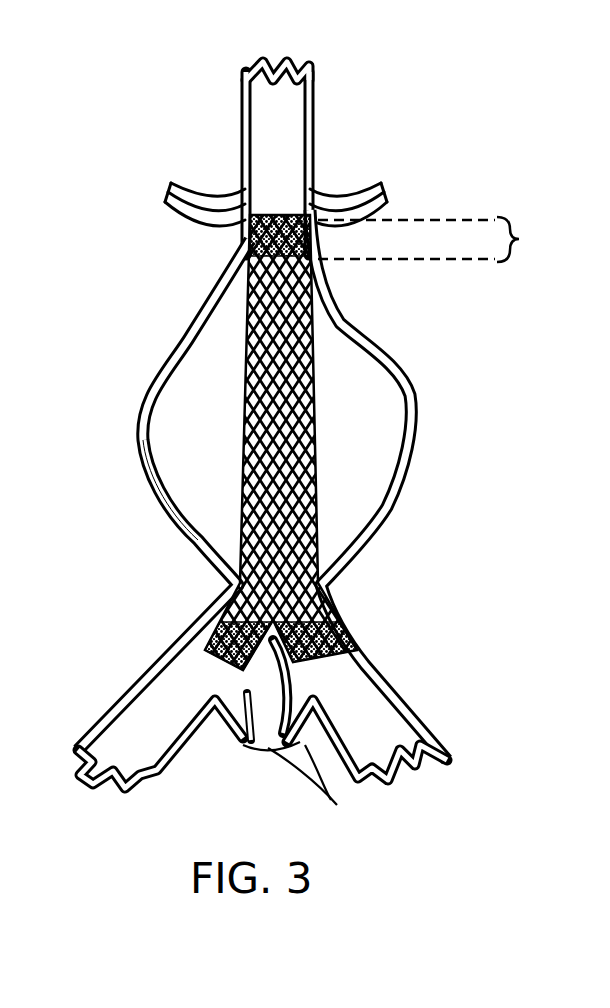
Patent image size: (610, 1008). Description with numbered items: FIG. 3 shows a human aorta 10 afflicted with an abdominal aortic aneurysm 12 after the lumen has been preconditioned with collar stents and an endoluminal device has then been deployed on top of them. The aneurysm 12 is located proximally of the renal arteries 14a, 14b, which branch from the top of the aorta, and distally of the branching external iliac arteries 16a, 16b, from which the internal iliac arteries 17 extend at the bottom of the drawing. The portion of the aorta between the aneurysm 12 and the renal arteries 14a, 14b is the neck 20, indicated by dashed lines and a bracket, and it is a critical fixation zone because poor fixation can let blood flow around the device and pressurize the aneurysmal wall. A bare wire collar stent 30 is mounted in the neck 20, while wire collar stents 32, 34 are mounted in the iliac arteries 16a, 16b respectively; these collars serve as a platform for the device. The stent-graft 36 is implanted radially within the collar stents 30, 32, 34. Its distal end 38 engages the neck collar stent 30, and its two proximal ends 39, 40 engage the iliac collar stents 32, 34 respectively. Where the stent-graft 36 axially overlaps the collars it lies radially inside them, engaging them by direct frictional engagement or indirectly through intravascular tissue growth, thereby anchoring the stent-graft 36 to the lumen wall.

The aorta 10 is at (243, 117).
The renal artery 14a is at (198, 188).
The renal artery 14b is at (385, 203).
The neck 20 is at (444, 239).
The distal end 38 is at (231, 237).
The collar stent 30 is at (250, 217).
The abdominal aortic aneurysm 12 is at (158, 388).
The stent-graft 36 is at (247, 468).
The proximal end 39 is at (201, 603).
The collar stent 32 is at (177, 648).
The proximal end 40 is at (343, 589).
The collar stent 34 is at (344, 607).
The external iliac artery 16a is at (150, 695).
The external iliac artery 16b is at (393, 682).
The internal iliac artery 17 is at (311, 792).